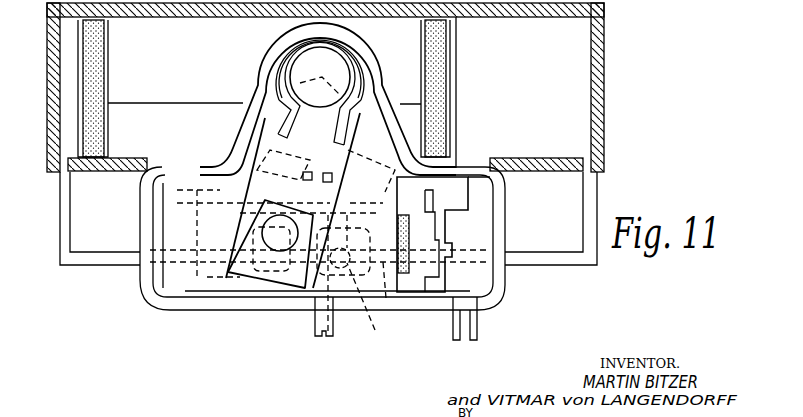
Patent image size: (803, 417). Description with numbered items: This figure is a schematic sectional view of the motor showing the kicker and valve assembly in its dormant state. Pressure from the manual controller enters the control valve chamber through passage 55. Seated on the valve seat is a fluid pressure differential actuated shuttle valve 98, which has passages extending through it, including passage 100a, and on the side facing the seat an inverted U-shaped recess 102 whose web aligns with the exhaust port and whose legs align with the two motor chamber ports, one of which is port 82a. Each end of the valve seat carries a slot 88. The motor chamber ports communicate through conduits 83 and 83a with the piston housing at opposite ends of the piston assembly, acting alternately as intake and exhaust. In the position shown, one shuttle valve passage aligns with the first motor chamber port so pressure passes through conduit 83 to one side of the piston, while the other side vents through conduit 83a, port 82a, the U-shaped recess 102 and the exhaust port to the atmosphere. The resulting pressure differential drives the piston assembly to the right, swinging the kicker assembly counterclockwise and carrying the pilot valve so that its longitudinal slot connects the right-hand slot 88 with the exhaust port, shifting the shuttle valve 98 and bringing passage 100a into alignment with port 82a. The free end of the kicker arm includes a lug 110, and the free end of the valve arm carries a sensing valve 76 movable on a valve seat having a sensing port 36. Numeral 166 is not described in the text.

The sensing port 36 is at (353, 200).
The passage 55 is at (462, 343).
The sensing valve 76 is at (320, 95).
The motor chamber port 82a is at (358, 265).
The conduit 83 is at (105, 257).
The conduit 83a is at (592, 203).
The slot 88 is at (410, 222).
The shuttle valve 98 is at (462, 178).
The passage 100a is at (357, 292).
The inverted U-shaped recess 102 is at (386, 298).
The lug 110 is at (290, 287).
The leaf spring 166 is at (252, 153).